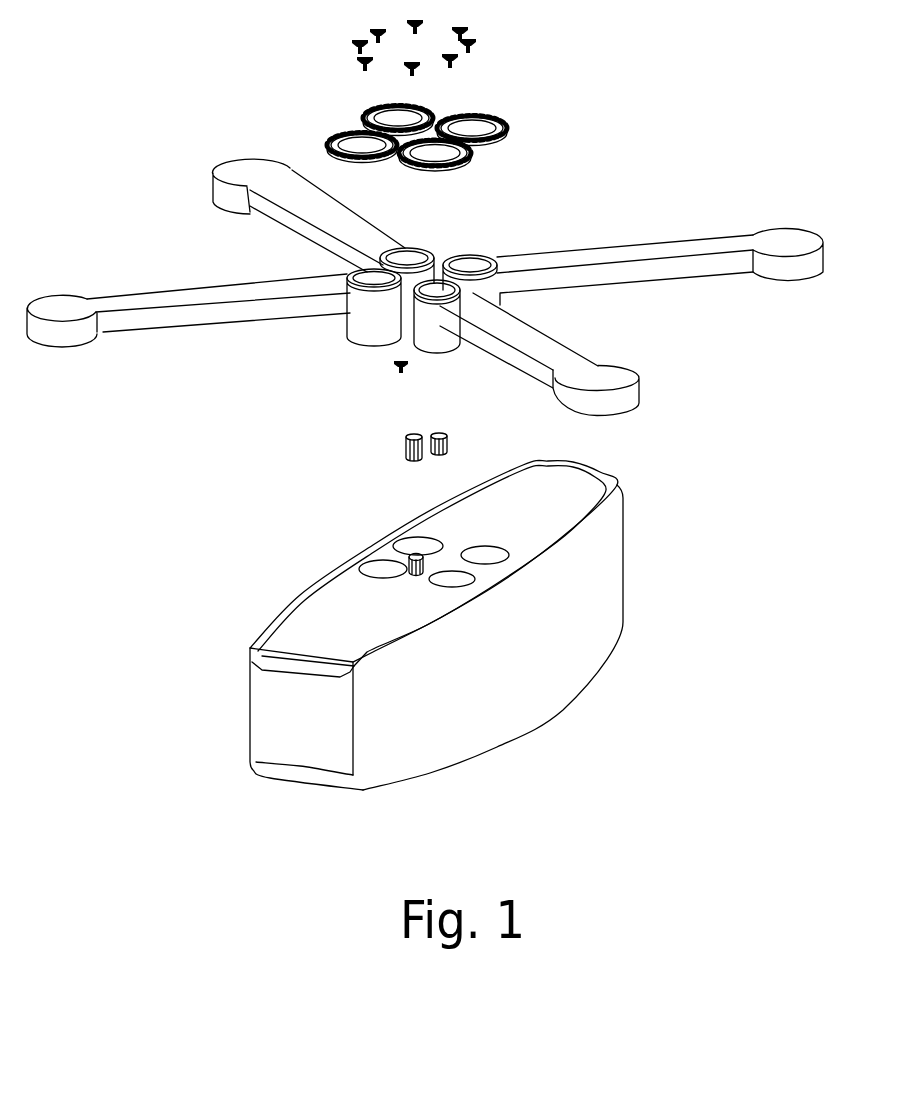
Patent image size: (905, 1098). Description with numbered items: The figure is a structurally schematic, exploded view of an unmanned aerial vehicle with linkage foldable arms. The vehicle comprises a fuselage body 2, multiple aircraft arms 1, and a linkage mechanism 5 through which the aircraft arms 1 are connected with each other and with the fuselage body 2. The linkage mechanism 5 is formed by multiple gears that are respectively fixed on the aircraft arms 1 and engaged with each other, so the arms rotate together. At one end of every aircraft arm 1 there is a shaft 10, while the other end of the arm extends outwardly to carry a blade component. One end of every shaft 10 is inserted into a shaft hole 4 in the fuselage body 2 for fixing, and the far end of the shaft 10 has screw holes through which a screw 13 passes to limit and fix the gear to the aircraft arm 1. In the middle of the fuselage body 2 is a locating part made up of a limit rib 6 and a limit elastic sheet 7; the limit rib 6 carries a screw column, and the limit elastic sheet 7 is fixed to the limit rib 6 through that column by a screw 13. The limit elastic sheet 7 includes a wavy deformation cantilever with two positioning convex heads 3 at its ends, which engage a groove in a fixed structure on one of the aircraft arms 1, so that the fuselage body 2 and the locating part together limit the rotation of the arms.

The aircraft arm 1 is at (647, 255).
The fuselage body 2 is at (585, 600).
The positioning convex head 3 is at (452, 447).
The shaft hole 4 is at (373, 569).
The linkage mechanism 5 is at (508, 128).
The limit rib 6 is at (416, 562).
The limit elastic sheet 7 is at (405, 450).
The shaft 10 is at (350, 328).
The screw 13 is at (356, 49).